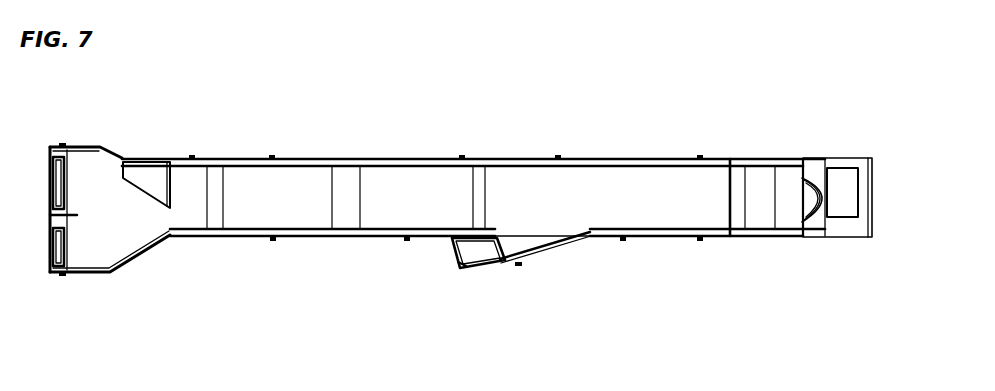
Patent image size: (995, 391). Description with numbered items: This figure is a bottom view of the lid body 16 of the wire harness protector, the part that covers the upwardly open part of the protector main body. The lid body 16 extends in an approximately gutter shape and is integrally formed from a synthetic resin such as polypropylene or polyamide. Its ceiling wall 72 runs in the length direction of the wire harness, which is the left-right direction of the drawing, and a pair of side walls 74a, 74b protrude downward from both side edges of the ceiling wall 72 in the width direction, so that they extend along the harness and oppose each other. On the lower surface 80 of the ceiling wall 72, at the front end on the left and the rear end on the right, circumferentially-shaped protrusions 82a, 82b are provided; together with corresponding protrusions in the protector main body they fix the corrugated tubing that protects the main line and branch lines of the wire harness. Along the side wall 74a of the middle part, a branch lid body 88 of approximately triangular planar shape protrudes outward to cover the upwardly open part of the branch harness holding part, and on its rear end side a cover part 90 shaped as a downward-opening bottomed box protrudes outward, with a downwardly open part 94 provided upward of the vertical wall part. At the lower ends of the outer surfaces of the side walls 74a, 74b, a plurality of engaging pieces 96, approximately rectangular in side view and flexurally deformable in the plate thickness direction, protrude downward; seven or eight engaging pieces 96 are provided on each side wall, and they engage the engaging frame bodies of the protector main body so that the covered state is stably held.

The lid body 16 is at (478, 70).
The ceiling wall 72 is at (630, 193).
The side wall 74a is at (322, 236).
The side wall 74b is at (372, 159).
The lower surface 80 is at (680, 207).
The circumferentially-shaped protrusion 82a is at (817, 203).
The circumferentially-shaped protrusion 82b is at (58, 187).
The branch lid body 88 is at (523, 243).
The cover part 90 is at (480, 252).
The downwardly open part 94 is at (468, 262).
The engaging pieces 96 is at (192, 157).